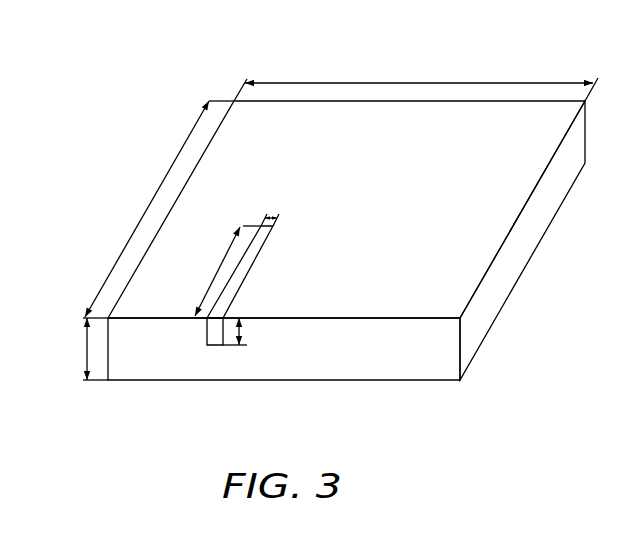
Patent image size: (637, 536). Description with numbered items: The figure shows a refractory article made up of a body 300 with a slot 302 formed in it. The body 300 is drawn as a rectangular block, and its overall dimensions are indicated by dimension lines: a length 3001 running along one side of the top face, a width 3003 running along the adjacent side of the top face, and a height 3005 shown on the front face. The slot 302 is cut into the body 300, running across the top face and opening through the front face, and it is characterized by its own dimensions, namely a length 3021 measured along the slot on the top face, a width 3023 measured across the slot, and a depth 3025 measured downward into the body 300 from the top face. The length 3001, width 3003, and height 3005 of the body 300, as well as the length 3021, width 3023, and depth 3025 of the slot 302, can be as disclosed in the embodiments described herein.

The body 300 is at (108, 44).
The slot 302 is at (217, 340).
The length 3001 is at (120, 257).
The width 3003 is at (377, 83).
The height 3005 is at (87, 348).
The length 3021 is at (220, 268).
The width 3023 is at (278, 216).
The depth 3025 is at (243, 326).